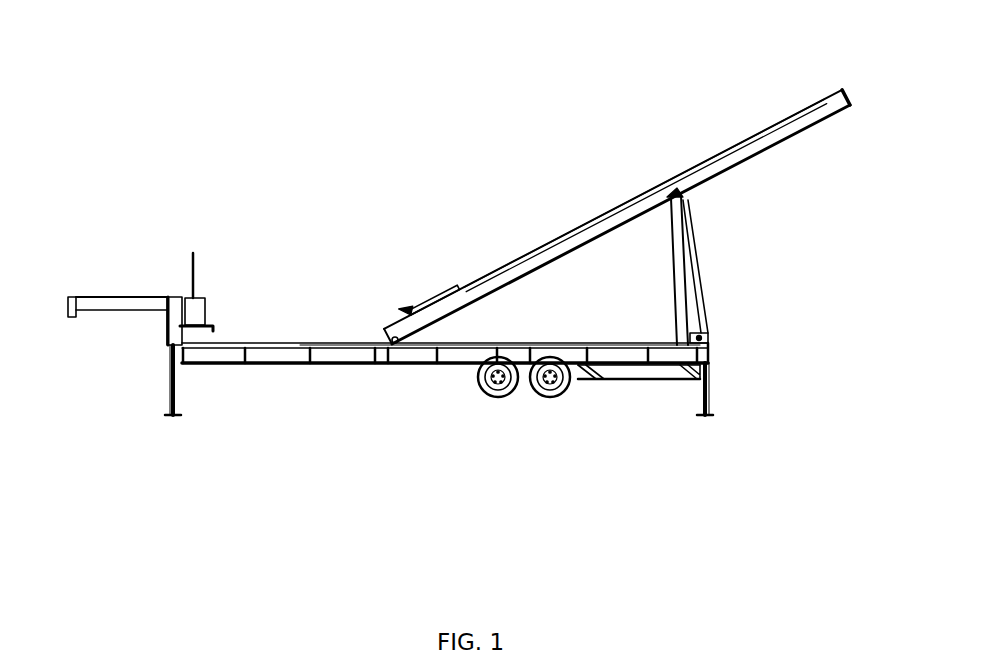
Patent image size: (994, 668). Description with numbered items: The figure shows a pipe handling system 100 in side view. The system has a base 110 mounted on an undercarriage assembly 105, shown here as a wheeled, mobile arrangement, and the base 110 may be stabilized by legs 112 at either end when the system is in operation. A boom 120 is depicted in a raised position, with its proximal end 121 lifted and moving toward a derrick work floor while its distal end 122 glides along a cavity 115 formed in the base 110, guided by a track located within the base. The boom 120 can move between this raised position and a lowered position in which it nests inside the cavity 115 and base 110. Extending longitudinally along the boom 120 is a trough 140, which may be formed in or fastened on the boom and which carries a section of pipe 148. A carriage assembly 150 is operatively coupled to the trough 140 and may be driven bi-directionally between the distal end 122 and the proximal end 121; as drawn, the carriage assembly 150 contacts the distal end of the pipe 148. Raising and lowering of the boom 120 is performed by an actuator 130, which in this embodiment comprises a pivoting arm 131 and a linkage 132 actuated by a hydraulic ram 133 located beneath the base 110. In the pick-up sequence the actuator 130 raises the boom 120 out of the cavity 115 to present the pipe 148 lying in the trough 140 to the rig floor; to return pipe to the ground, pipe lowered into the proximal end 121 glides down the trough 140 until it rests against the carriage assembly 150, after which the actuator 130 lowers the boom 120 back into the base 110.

The pipe handling system 100 is at (773, 62).
The undercarriage assembly 105 is at (492, 386).
The base 110 is at (309, 343).
The legs 112 is at (176, 392).
The cavity 115 is at (485, 343).
The boom 120 is at (763, 134).
The proximal end 121 is at (852, 108).
The distal end 122 is at (404, 340).
The actuator 130 is at (700, 228).
The pivoting arm 131 is at (707, 289).
The linkage 132 is at (709, 337).
The hydraulic ram 133 is at (597, 380).
The trough 140 is at (644, 201).
The pipe 148 is at (536, 254).
The carriage assembly 150 is at (428, 307).